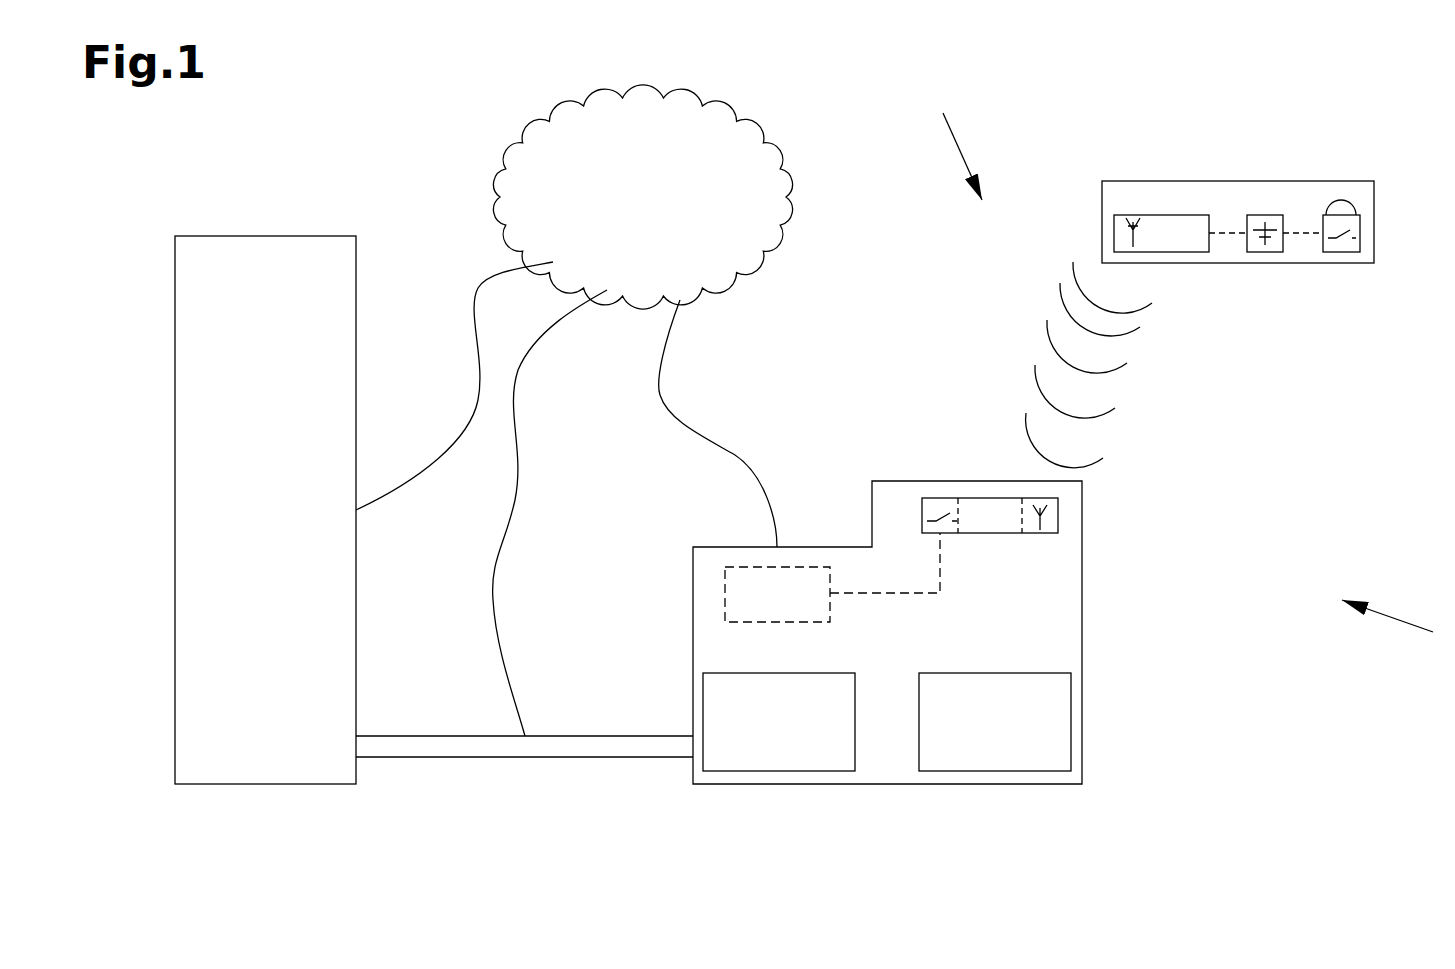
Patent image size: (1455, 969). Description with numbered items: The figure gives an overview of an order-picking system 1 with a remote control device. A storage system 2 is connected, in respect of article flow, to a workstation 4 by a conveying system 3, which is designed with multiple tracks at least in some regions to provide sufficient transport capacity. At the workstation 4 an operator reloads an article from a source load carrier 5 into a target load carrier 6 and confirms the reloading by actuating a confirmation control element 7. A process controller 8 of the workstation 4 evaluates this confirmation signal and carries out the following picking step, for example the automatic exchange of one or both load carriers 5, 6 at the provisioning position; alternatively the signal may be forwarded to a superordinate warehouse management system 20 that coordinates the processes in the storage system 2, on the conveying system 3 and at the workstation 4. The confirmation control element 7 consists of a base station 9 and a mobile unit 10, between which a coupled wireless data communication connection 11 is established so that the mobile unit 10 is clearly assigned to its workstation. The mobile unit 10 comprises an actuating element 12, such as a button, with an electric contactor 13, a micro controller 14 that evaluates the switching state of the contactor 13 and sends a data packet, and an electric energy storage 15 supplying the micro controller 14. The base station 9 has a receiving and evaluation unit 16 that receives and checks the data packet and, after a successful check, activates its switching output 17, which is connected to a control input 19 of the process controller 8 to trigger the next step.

The order-picking system 1 is at (1398, 624).
The storage system 2 is at (313, 765).
The conveying system 3 is at (589, 750).
The workstation 4 is at (1072, 632).
The source load carrier 5 is at (1047, 742).
The target load carrier 6 is at (811, 750).
The confirmation control element 7 is at (669, 409).
The process controller 8 is at (798, 568).
The base station 9 is at (1042, 442).
The mobile unit 10 is at (1278, 235).
The wireless data communication connection 11 is at (1157, 390).
The actuating element 12 is at (1345, 207).
The electric contactor 13 is at (1342, 244).
The micro controller 14 is at (1153, 243).
The electric energy storage 15 is at (1268, 245).
The receiving and evaluation unit 16 is at (988, 510).
The switching output 17 is at (930, 510).
The control input 19 is at (830, 593).
The warehouse management system 20 is at (748, 160).